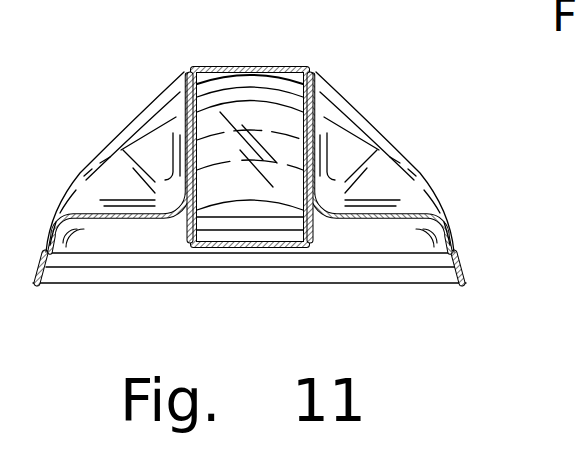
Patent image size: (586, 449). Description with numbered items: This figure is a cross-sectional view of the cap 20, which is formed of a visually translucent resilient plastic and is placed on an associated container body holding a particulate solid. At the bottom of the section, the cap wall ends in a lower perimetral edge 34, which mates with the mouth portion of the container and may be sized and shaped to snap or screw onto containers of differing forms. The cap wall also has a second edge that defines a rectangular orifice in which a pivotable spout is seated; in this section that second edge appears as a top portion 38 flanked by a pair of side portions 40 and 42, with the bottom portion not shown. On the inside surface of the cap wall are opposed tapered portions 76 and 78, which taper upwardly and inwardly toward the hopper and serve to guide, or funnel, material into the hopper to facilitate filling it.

The cap 20 is at (261, 172).
The lower perimetral edge 34 is at (423, 274).
The top portion 38 is at (272, 65).
The side portion 40 is at (183, 77).
The side portion 42 is at (317, 78).
The tapered portion 76 is at (157, 237).
The tapered portion 78 is at (343, 235).